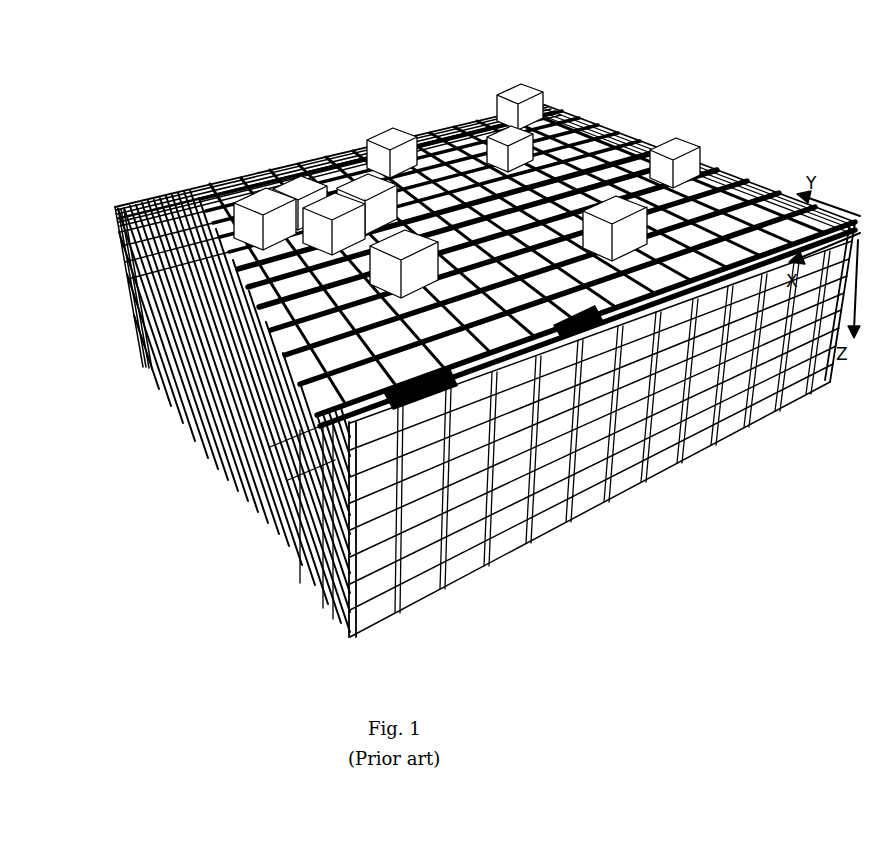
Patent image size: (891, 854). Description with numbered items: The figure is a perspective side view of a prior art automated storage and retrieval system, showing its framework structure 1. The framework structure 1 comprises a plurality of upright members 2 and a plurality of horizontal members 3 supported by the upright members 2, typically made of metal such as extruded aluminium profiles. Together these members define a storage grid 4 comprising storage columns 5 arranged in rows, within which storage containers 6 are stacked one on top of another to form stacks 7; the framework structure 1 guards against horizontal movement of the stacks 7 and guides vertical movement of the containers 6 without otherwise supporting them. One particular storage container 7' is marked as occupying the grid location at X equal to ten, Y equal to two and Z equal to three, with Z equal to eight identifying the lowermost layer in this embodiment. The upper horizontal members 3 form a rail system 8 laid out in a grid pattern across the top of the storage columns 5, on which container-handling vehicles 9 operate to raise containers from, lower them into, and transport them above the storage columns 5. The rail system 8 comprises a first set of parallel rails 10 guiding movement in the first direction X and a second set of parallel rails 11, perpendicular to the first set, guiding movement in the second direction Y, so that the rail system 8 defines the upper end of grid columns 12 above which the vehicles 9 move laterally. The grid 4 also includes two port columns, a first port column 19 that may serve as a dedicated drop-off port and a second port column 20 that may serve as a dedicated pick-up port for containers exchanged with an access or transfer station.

The framework structure 1 is at (785, 193).
The upright members 2 is at (353, 533).
The horizontal members 3 is at (295, 477).
The storage grid 4 is at (431, 115).
The storage columns 5 is at (273, 447).
The storage containers 6 is at (397, 560).
The stacks 7 is at (698, 389).
The storage container 7' is at (445, 496).
The rail system 8 is at (346, 153).
The container-handling vehicles 9 is at (540, 100).
The first set of parallel rails 10 is at (263, 308).
The second set of parallel rails 11 is at (178, 207).
The grid columns 12 is at (718, 243).
The first port column 19 is at (430, 393).
The second port column 20 is at (582, 330).